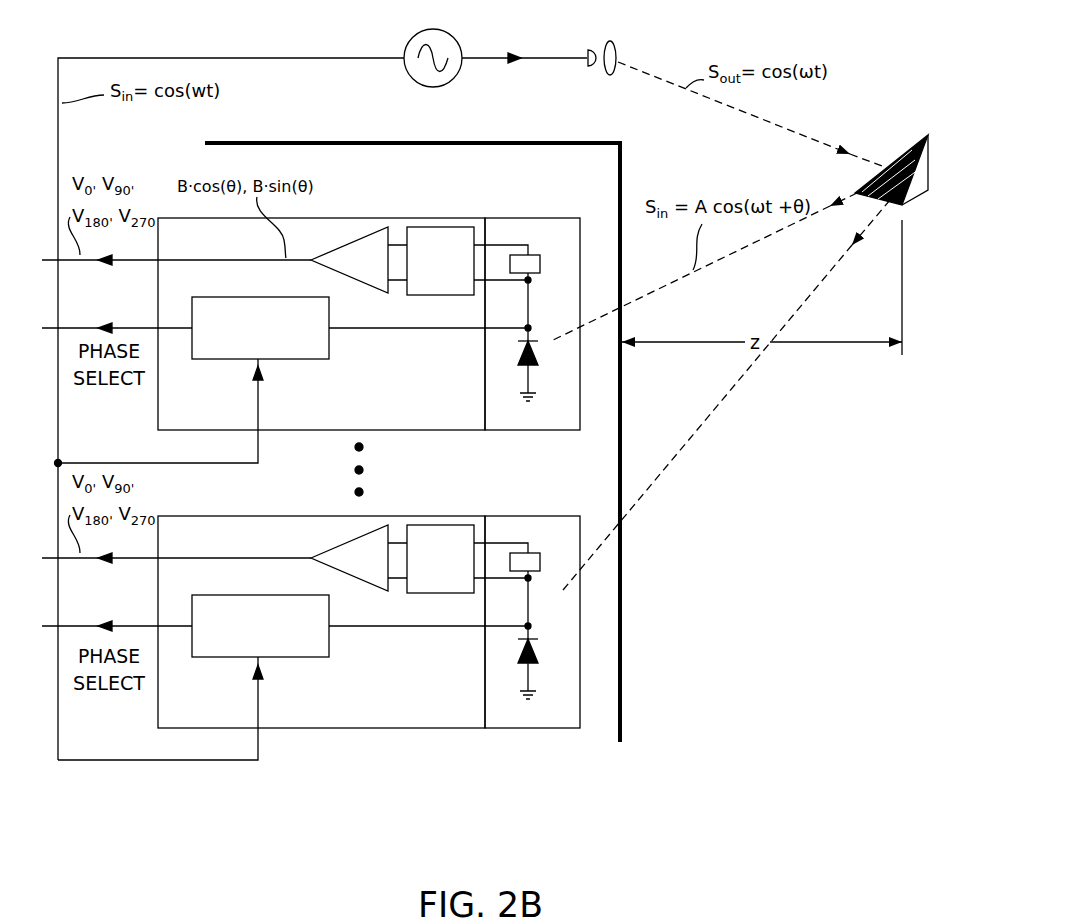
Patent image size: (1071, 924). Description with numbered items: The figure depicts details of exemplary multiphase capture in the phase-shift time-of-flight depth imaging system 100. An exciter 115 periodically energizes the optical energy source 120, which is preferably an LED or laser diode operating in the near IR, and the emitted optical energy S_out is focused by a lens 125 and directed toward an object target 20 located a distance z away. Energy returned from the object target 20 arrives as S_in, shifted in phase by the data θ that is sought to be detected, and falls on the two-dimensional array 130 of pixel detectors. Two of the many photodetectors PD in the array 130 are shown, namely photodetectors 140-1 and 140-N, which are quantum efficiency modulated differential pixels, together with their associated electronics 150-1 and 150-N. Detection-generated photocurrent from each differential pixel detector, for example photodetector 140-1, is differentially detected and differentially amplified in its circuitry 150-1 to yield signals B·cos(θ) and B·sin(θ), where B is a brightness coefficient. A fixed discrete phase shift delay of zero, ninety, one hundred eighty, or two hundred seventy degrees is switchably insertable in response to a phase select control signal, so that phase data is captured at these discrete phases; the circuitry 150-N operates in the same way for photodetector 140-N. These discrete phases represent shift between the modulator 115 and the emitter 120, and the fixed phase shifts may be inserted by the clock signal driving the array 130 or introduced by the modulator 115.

The object target 20 is at (893, 143).
The phase-shift TOF depth imaging system 100 is at (627, 141).
The exciter 115 is at (459, 99).
The optical energy source 120 is at (595, 76).
The lens 125 is at (590, 43).
The array 130 is at (618, 637).
The photodetector 140-1 is at (509, 217).
The photodetector 140-N is at (529, 600).
The dedicated circuitry 150-1 is at (422, 217).
The dedicated circuitry 150-N is at (265, 600).